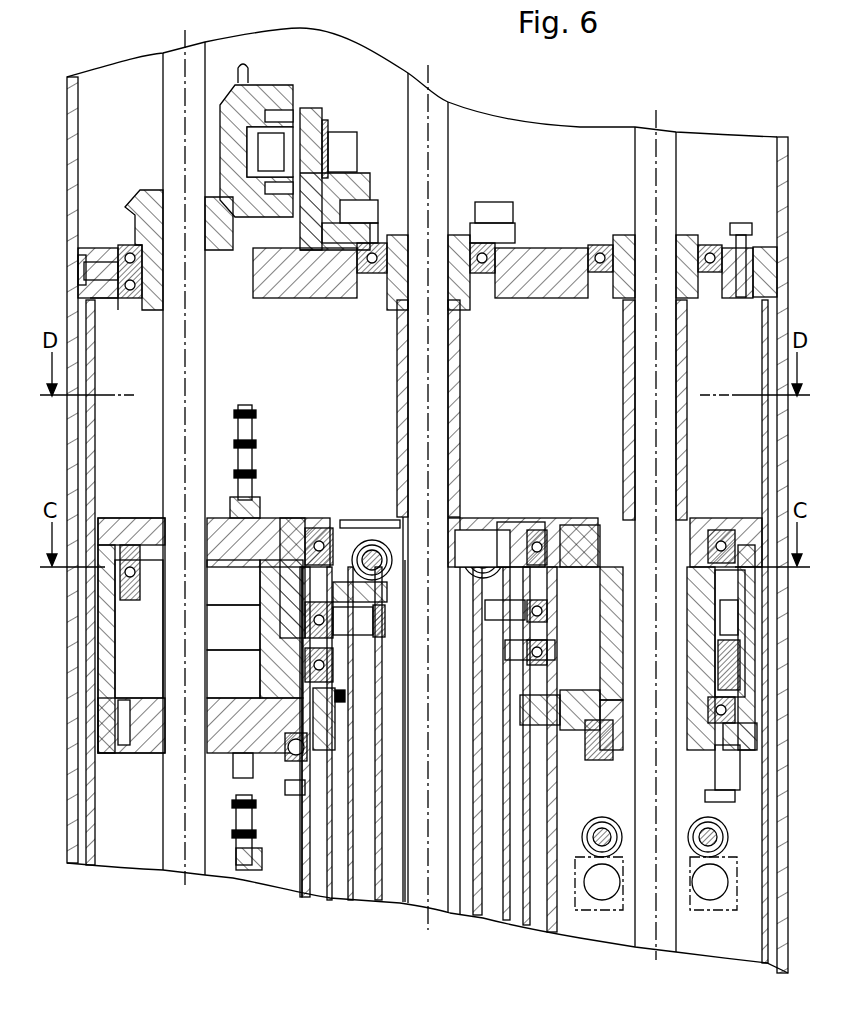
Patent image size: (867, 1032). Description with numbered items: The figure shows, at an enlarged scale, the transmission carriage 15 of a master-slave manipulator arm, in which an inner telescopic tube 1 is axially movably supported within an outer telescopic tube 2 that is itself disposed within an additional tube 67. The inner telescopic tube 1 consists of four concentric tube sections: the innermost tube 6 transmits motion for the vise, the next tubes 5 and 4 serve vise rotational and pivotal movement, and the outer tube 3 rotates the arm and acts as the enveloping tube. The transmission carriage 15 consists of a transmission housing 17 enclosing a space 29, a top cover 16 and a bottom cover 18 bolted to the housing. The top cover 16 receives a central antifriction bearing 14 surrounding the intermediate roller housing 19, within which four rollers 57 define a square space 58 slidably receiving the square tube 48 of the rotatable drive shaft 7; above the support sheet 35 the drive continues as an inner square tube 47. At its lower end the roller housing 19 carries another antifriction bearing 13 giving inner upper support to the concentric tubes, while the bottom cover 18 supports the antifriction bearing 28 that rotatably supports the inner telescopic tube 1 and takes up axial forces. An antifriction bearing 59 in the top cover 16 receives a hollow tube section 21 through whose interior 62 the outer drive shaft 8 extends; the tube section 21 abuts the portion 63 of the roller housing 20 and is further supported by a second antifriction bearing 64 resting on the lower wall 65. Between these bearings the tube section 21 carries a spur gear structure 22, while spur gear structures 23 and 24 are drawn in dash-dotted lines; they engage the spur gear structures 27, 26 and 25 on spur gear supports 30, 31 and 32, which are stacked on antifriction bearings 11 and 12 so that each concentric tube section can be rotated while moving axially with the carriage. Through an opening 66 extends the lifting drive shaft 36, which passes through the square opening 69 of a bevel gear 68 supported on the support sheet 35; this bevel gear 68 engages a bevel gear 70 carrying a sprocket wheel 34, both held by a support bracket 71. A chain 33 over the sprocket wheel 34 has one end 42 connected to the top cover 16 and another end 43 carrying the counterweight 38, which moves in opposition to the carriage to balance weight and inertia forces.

The inner telescopic tube 1 is at (430, 825).
The outer telescopic tube 2 is at (95, 413).
The outer tube section 3 is at (310, 880).
The tube section 4 is at (320, 865).
The tube section 5 is at (355, 845).
The innermost tube 6 is at (383, 820).
The rotatable drive shaft 7 is at (452, 423).
The outer drive shaft 8 is at (682, 434).
The antifriction bearing 11 is at (335, 695).
The antifriction bearing 12 is at (335, 655).
The antifriction bearing 13 is at (300, 535).
The central antifriction bearing 14 is at (313, 530).
The transmission carriage 15 is at (168, 655).
The top cover 16 is at (170, 560).
The transmission housing 17 is at (105, 642).
The bottom cover 18 is at (120, 700).
The intermediate roller housing 19 is at (508, 540).
The roller housing 20 is at (725, 862).
The tube section 21 is at (700, 540).
The spur gear structure 22 is at (722, 632).
The spur gear structure 23 is at (705, 597).
The spur gear structure 24 is at (722, 666).
The spur gear structure 25 is at (265, 676).
The spur gear structure 26 is at (265, 634).
The spur gear structure 27 is at (265, 601).
The antifriction bearing 28 is at (285, 780).
The space 29 is at (172, 594).
The spur gear support 30 is at (505, 612).
The spur gear support 31 is at (515, 650).
The spur gear support 32 is at (520, 705).
The chain 33 is at (252, 412).
The sprocket wheel 34 is at (250, 80).
The support sheet 35 is at (305, 285).
The lifting drive shaft 36 is at (170, 150).
The counterweight 38 is at (285, 878).
The chain end 42 is at (228, 497).
The chain end 43 is at (233, 851).
The inner square tube 47 is at (448, 168).
The square tube 48 is at (462, 484).
The rollers 57 is at (365, 540).
The square space 58 is at (388, 530).
The antifriction bearing 59 is at (575, 528).
The interior 62 is at (610, 540).
The roller housing portion 63 is at (695, 812).
The second antifriction bearing 64 is at (705, 712).
The lower wall 65 is at (608, 745).
The opening 66 is at (150, 530).
The tube 67 is at (78, 186).
The bevel gear 68 is at (155, 310).
The opening 69 is at (150, 228).
The bevel gear 70 is at (225, 108).
The support bracket 71 is at (310, 197).